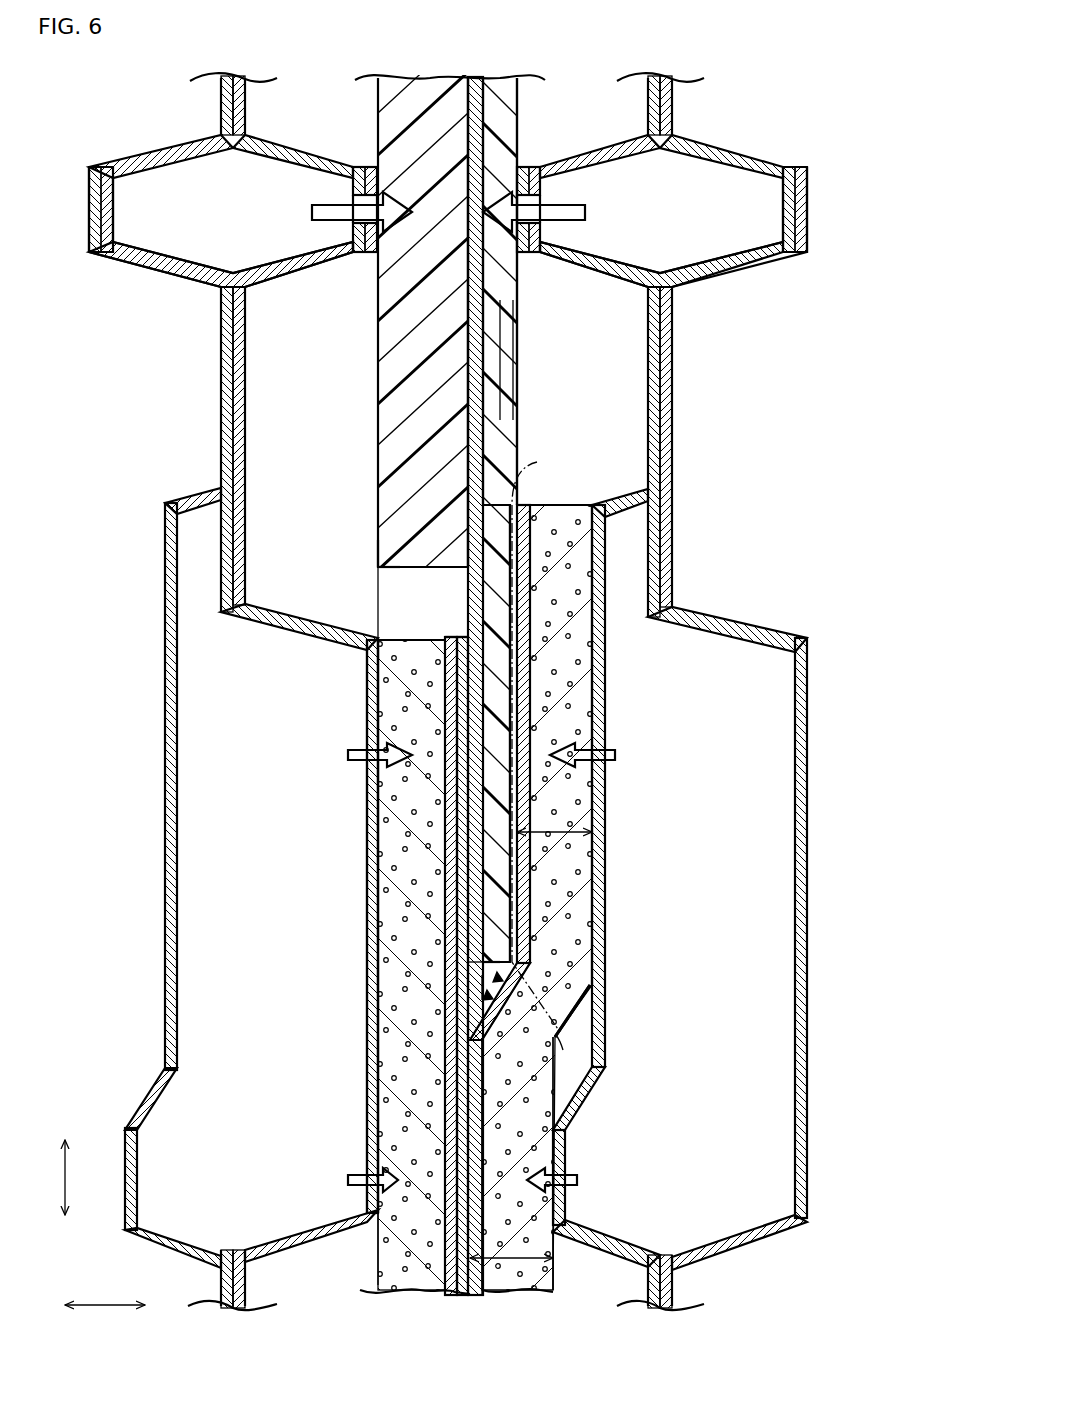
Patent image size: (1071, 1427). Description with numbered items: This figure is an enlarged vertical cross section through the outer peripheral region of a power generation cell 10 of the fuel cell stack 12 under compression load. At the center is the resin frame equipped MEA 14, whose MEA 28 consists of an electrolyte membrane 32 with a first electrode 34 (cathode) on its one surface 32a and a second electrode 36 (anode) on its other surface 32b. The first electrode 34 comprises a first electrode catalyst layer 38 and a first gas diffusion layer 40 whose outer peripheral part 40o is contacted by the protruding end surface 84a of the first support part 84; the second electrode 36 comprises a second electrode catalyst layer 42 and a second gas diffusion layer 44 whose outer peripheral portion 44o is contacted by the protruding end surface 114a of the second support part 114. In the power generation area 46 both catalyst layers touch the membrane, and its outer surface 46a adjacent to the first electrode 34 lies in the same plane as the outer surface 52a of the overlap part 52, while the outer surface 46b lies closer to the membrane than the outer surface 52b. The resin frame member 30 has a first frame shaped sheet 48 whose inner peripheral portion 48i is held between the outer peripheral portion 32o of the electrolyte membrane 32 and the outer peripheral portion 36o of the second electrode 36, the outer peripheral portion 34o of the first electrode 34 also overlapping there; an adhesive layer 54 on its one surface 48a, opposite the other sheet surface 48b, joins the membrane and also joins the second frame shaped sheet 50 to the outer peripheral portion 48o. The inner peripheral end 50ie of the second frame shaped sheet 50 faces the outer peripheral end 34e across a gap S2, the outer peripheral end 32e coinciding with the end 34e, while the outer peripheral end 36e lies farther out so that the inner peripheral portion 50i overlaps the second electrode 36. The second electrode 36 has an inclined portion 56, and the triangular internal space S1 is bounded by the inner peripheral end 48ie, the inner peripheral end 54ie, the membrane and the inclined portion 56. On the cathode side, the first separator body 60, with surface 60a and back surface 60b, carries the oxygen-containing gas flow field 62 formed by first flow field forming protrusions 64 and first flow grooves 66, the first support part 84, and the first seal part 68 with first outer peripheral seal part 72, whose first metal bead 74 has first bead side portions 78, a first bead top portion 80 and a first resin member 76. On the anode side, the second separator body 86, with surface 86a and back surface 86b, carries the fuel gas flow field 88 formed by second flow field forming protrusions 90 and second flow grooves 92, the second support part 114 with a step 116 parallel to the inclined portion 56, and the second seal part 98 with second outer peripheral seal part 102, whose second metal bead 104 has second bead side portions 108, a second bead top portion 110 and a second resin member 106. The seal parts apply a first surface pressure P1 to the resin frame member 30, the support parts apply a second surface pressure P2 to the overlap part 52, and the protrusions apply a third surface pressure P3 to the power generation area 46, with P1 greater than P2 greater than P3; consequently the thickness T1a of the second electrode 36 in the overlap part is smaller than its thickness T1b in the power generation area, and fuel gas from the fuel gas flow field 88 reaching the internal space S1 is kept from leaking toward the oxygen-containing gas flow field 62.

The power generation cell 10 is at (450, 42).
The fuel cell stack 12 is at (790, 30).
The resin frame equipped MEA 14 is at (470, 72).
The MEA 28 is at (215, 1060).
The resin frame member 30 is at (418, 73).
The electrolyte membrane 32 is at (463, 1134).
The one surface of the electrolyte membrane 32a is at (455, 1032).
The other surface of the electrolyte membrane 32b is at (553, 1105).
The outer peripheral end of the electrolyte membrane 32e is at (463, 637).
The outer peripheral portion of the electrolyte membrane 32o is at (462, 680).
The first electrode 34 is at (252, 1148).
The outer peripheral end of the first electrode 34e is at (388, 638).
The outer peripheral portion of the first electrode 34o is at (390, 842).
The second electrode 36 is at (252, 1058).
The outer peripheral end of the second electrode 36e is at (558, 505).
The outer peripheral portion of the second electrode 36o is at (575, 662).
The first electrode catalyst layer 38 is at (450, 1155).
The first gas diffusion layer 40 is at (417, 1202).
The outer peripheral part of the first gas diffusion layer 40o is at (411, 965).
The second electrode catalyst layer 42 is at (477, 1090).
The second gas diffusion layer 44 is at (490, 1068).
The outer peripheral portion of the second gas diffusion layer 44o is at (537, 897).
The power generation area 46 is at (556, 1155).
The outer surface of the power generation area adjacent to the first electrode 46a is at (374, 1262).
The outer surface of the power generation area adjacent to the second electrode 46b is at (555, 1268).
The first frame shaped sheet 48 is at (498, 334).
The one surface of the first frame shaped sheet 48a is at (498, 384).
The insulating body second layer 48b is at (513, 357).
The outer peripheral portion of the first frame shaped sheet 48o is at (496, 100).
The inner peripheral portion of the first frame shaped sheet 48i is at (496, 915).
The inner peripheral end of the first frame shaped sheet 48ie is at (480, 978).
The second frame shaped sheet 50 is at (383, 350).
The inner peripheral portion of the second frame shaped sheet 50i is at (377, 548).
The inner peripheral end of the second frame shaped sheet 50ie is at (398, 572).
The overlap part 52 is at (600, 713).
The outer surface of the overlap part adjacent to the first electrode 52a is at (378, 910).
The outer surface of the overlap part adjacent to the second electrode 52b is at (605, 738).
The adhesive layer 54 is at (470, 478).
The inner peripheral end of the adhesive layer 54ie is at (470, 968).
The inclined portion 56 is at (563, 1017).
The first separator body 60 is at (248, 332).
The surface of the first separator body 60a is at (248, 397).
The back surface of the first separator body 60b is at (228, 360).
The oxygen-containing gas flow field 62 is at (275, 1272).
The first flow field forming protrusions 64 is at (370, 888).
The first flow grooves 66 is at (173, 1248).
The first seal part 68 is at (221, 227).
The first outer peripheral seal part 72 is at (332, 160).
The first metal bead 74 is at (247, 182).
The first resin member 76 is at (372, 252).
The first bead side portions 78 is at (330, 178).
The first bead top portion 80 is at (348, 235).
The first support part 84 is at (368, 734).
The protruding end surface of the first support part 84a is at (380, 706).
The second separator body 86 is at (652, 408).
The surface of the second separator body 86a is at (648, 433).
The back surface of the second separator body 86b is at (665, 414).
The fuel gas flow field 88 is at (623, 1270).
The second flow field forming protrusions 90 is at (565, 1210).
The second flow grooves 92 is at (739, 1242).
The second seal part 98 is at (673, 227).
The second outer peripheral seal part 102 is at (553, 165).
The second metal bead 104 is at (672, 185).
The second resin member 106 is at (522, 250).
The second bead side portions 108 is at (597, 172).
The second bead top portion 110 is at (542, 230).
The second support part 114 is at (524, 905).
The protruding end surface of the second support part 114a is at (588, 872).
The step 116 is at (583, 1113).
The first surface pressure P1 is at (450, 212).
The second surface pressure P2 is at (481, 755).
The third surface pressure P3 is at (465, 1180).
The internal space S1 is at (488, 1003).
The gap S2 is at (412, 615).
The thickness of the second electrode in the overlap part T1a is at (585, 830).
The thickness of the second electrode in the power generation area T1b is at (517, 1267).